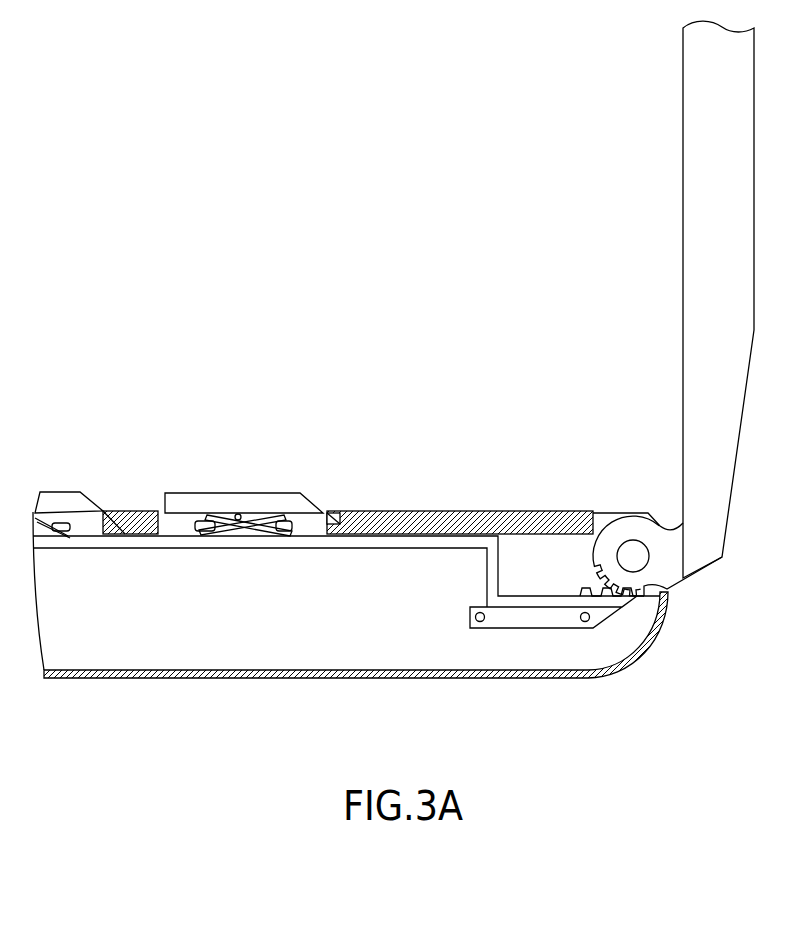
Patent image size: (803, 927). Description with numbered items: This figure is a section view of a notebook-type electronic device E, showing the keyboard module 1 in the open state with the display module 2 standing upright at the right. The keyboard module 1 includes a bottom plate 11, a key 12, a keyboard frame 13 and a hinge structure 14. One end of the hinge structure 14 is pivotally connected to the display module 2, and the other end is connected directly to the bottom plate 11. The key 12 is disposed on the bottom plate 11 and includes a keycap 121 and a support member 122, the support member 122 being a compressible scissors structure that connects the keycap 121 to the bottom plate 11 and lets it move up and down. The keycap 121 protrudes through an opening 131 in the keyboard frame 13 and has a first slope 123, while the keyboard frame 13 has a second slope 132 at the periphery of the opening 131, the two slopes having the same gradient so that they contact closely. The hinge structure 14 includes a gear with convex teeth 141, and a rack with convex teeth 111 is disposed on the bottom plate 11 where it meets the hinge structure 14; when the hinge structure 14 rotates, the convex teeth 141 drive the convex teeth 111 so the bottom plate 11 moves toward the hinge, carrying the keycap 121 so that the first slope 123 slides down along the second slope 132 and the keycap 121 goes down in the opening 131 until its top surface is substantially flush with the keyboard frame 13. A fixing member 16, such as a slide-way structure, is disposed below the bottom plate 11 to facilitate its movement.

The electronic device E is at (145, 85).
The keyboard module 1 is at (95, 450).
The display module 2 is at (706, 270).
The bottom plate 11 is at (390, 545).
The convex teeth 111 is at (632, 598).
The key 12 is at (327, 446).
The keycap 121 is at (254, 506).
The support member 122 is at (213, 510).
The first slope 123 is at (312, 505).
The keyboard frame 13 is at (447, 511).
The opening 131 is at (163, 508).
The second slope 132 is at (340, 509).
The hinge structure 14 is at (633, 532).
The convex teeth 141 is at (645, 590).
The fixing member 16 is at (538, 620).